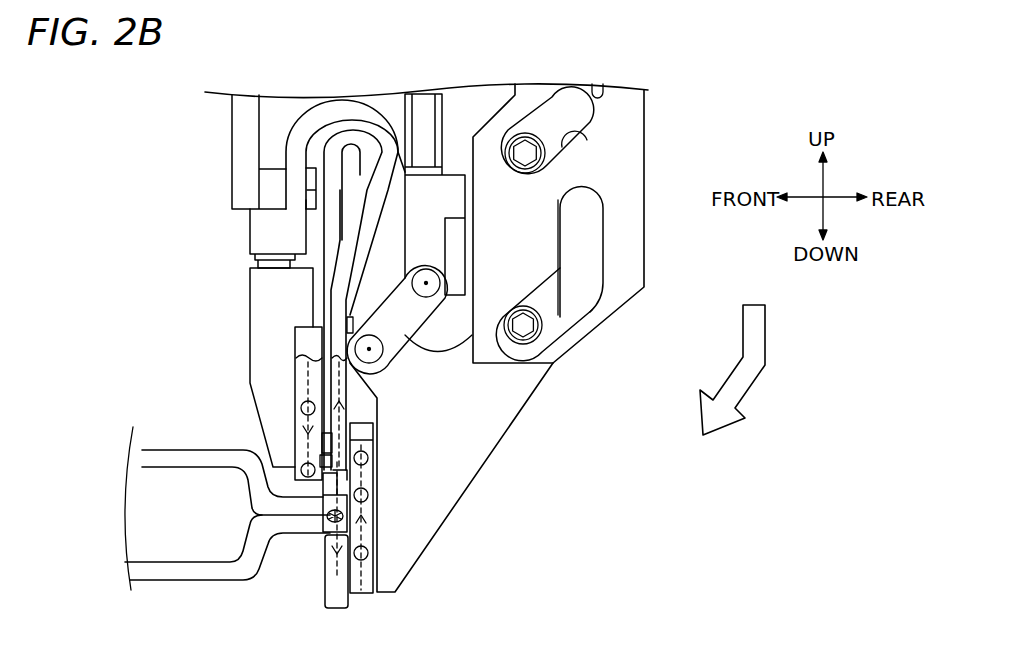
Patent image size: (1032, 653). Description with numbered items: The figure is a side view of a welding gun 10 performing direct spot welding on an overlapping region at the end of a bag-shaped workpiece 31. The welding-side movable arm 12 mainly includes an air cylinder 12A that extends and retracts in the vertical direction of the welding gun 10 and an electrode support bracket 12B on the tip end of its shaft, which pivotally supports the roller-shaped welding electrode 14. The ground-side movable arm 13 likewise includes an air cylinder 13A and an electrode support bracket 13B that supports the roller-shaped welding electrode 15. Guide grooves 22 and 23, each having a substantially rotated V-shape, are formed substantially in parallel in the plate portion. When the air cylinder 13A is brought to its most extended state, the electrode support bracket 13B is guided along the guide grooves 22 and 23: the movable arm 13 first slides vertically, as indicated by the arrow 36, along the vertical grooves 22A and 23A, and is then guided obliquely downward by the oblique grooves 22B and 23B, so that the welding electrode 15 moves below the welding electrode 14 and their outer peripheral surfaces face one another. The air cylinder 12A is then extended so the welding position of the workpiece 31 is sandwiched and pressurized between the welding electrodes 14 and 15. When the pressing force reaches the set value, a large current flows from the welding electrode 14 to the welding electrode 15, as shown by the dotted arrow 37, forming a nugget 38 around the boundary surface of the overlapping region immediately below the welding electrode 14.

The welding gun 10 is at (372, 60).
The movable arm 12 is at (175, 183).
The air cylinder 12A is at (277, 132).
The electrode support bracket 12B is at (275, 352).
The movable arm 13 is at (576, 461).
The air cylinder 13A is at (425, 122).
The electrode support bracket 13B is at (447, 461).
The welding electrode 14 is at (323, 488).
The welding electrode 15 is at (332, 595).
The guide groove 22 is at (689, 57).
The vertical groove 22A is at (598, 84).
The oblique groove 22B is at (570, 148).
The guide groove 23 is at (689, 225).
The vertical groove 23A is at (598, 214).
The oblique groove 23B is at (566, 313).
The workpiece 31 is at (167, 455).
The arrow 36 is at (752, 333).
The dotted arrow 37 is at (293, 392).
The nugget 38 is at (327, 517).